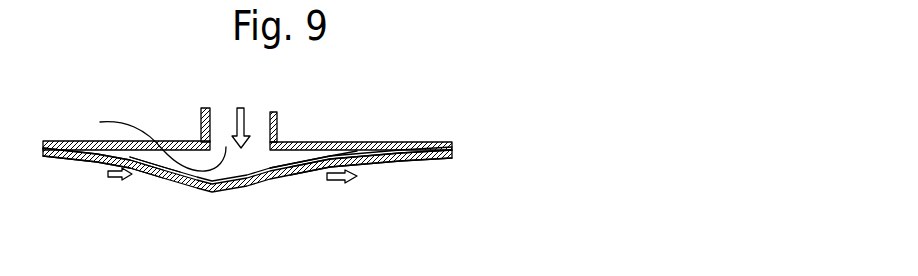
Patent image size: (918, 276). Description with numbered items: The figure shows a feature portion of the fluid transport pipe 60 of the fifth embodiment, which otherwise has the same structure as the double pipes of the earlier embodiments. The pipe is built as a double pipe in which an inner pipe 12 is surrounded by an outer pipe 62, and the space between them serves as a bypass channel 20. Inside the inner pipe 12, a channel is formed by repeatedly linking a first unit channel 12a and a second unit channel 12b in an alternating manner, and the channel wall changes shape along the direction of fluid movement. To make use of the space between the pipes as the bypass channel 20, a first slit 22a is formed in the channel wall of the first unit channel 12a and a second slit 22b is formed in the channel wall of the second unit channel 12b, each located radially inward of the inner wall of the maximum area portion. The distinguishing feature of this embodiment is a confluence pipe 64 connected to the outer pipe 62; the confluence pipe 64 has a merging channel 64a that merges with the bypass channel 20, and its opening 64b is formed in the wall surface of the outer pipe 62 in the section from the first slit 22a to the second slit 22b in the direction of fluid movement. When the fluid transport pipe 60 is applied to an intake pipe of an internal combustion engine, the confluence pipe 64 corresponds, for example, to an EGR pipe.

The fluid transport pipe 60 is at (299, 126).
The outer pipe 62 is at (470, 126).
The confluence pipe 64 is at (277, 118).
The merging channel 64a is at (210, 126).
The opening 64b is at (134, 139).
The inner pipe 12 is at (267, 201).
The first unit channel 12a is at (123, 198).
The second unit channel 12b is at (357, 202).
The bypass channel 20 is at (280, 170).
The first slit 22a is at (148, 167).
The second slit 22b is at (307, 170).